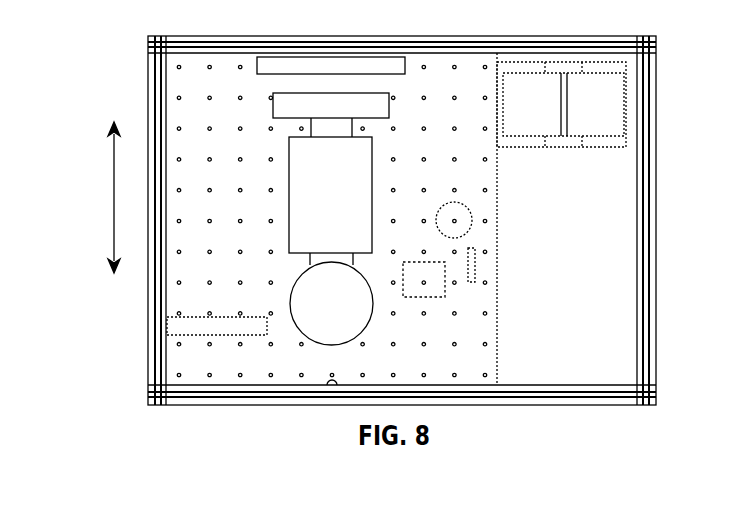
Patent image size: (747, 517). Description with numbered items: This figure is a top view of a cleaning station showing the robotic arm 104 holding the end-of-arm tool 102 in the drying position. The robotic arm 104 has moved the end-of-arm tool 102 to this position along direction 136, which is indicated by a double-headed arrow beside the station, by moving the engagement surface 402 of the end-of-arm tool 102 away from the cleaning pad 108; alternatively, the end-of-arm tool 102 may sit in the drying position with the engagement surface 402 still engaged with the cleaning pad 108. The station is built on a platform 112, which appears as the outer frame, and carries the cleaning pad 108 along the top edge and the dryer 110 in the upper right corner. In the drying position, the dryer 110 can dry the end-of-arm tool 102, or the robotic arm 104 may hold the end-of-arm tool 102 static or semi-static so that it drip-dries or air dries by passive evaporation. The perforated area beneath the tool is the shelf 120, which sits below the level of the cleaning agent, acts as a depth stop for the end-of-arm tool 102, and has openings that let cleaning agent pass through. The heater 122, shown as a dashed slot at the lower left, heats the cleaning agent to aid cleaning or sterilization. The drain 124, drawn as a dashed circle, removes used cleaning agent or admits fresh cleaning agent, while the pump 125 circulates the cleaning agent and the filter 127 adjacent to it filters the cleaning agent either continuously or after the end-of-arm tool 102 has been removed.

The end-of-arm tool 102 is at (390, 106).
The robotic arm 104 is at (371, 322).
The cleaning pad 108 is at (363, 65).
The dryer 110 is at (625, 107).
The platform 112 is at (150, 395).
The shelf 120 is at (178, 360).
The heater 122 is at (180, 322).
The drain 124 is at (470, 222).
The pump 125 is at (446, 290).
The filter 127 is at (476, 268).
The direction 136 is at (114, 190).
The engagement surface 402 is at (303, 93).